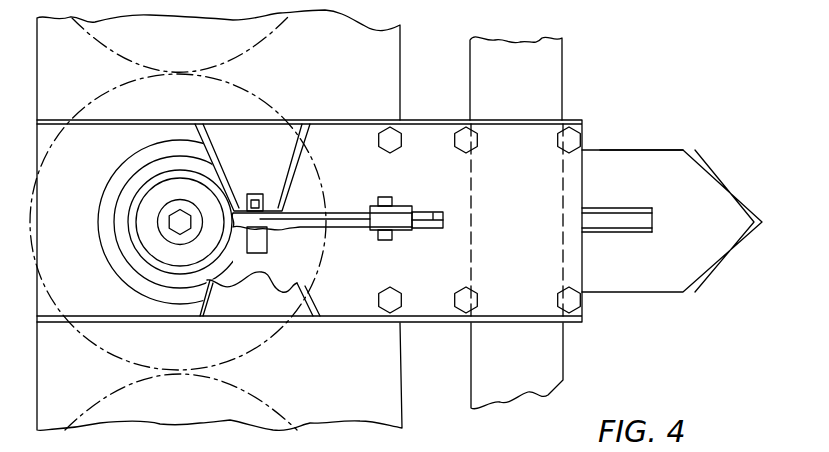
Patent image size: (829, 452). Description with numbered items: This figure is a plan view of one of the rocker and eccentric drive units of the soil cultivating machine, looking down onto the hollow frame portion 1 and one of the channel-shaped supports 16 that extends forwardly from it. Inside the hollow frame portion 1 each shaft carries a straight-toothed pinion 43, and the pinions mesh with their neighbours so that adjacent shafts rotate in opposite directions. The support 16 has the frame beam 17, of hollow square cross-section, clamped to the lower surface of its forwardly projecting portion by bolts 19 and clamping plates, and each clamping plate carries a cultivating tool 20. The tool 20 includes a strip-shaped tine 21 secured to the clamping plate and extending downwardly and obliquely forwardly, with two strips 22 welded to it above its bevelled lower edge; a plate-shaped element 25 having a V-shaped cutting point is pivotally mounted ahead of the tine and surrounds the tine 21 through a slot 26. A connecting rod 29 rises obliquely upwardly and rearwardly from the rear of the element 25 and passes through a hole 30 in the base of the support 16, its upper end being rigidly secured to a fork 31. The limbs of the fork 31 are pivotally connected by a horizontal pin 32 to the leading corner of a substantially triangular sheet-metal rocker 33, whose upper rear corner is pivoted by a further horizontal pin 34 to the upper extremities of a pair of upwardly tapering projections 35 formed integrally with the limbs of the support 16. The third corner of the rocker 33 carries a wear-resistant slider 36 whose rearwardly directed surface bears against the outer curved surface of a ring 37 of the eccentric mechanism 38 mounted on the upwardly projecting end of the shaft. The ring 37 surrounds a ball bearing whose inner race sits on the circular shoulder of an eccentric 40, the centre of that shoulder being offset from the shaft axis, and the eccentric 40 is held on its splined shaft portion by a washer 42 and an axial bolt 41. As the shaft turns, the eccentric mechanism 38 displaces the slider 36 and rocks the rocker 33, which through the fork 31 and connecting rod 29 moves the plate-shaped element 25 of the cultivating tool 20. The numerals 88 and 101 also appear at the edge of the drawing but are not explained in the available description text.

The hollow frame portion 1 is at (410, 391).
The channel-shaped support 16 is at (98, 137).
The frame beam 17 is at (508, 52).
The bolt 19 is at (530, 162).
The cultivating tool 20 is at (652, 299).
The strip-shaped tine 21 is at (645, 226).
The strip 22 is at (378, 447).
The plate-shaped element 25 is at (653, 155).
The slot 26 is at (648, 198).
The connecting rod 29 is at (428, 233).
The hole 30 is at (433, 221).
The fork 31 is at (408, 207).
The horizontal pin 32 is at (374, 243).
The rocker 33 is at (343, 217).
The horizontal pin 34 is at (262, 184).
The upward projection 35 is at (286, 148).
The wear-resistant slider 36 is at (261, 242).
The ring 37 is at (113, 263).
The eccentric mechanism 38 is at (92, 192).
The eccentric 40 is at (153, 243).
The axial bolt 41 is at (170, 222).
The washer 42 is at (168, 204).
The pinion 43 is at (272, 90).
The element 88 is at (271, 445).
The element 101 is at (337, 443).